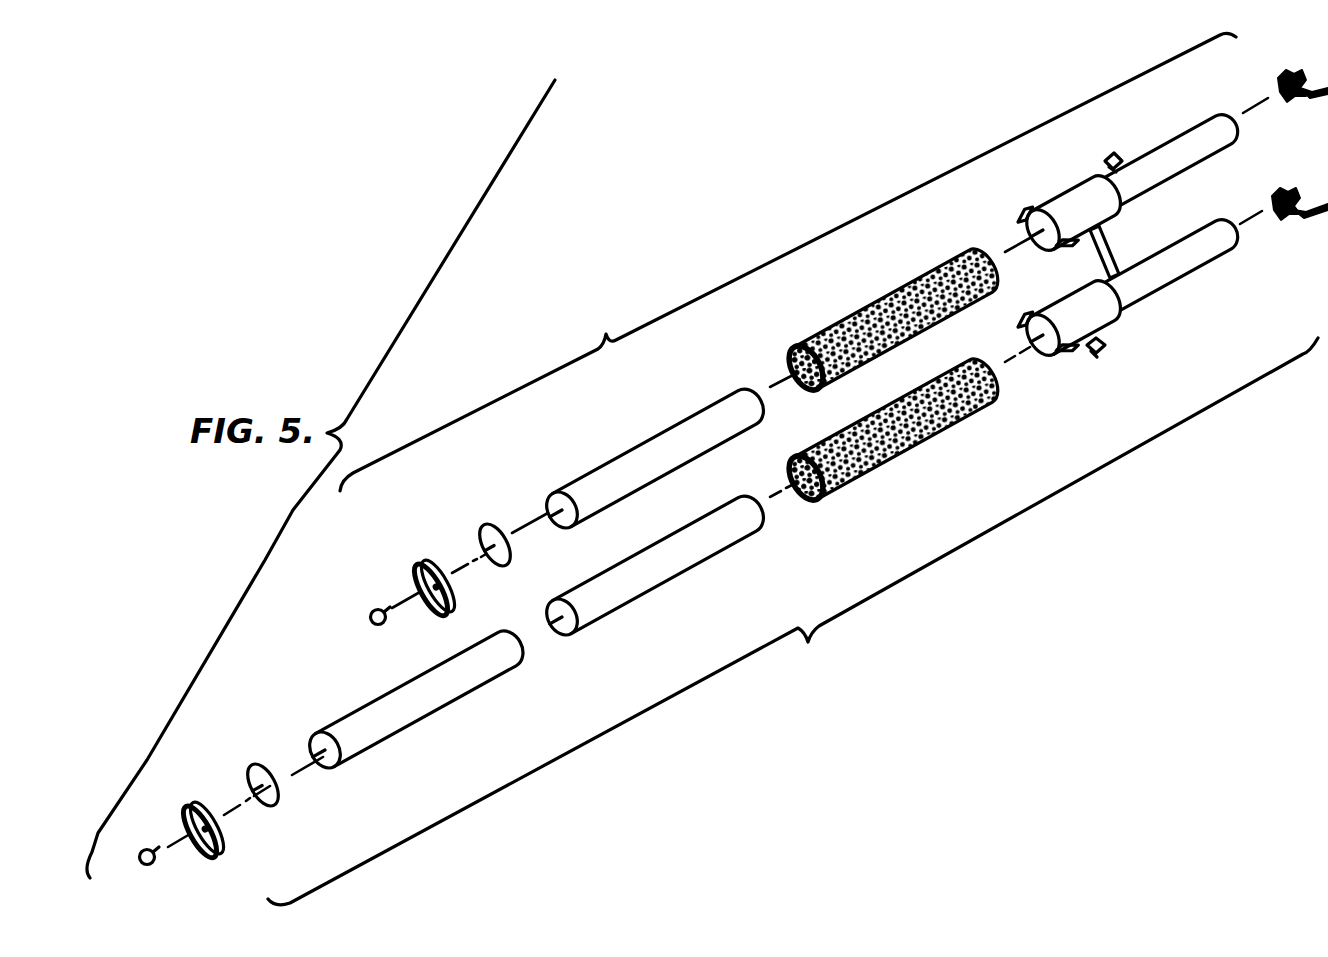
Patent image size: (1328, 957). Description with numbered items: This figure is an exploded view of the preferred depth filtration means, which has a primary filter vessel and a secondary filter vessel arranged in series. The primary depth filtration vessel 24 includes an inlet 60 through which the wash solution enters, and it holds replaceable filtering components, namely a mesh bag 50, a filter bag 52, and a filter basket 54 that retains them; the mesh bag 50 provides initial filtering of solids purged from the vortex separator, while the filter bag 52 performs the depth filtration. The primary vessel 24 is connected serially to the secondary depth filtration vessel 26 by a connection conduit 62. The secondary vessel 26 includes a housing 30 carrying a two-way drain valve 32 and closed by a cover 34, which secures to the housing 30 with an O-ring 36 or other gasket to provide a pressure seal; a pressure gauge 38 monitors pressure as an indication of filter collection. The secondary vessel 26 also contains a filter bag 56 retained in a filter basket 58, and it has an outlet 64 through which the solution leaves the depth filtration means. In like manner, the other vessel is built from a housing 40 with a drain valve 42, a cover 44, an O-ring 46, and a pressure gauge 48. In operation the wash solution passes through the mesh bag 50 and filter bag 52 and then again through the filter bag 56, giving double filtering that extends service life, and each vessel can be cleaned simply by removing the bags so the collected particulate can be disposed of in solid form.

The depth filtration vessel 24 is at (793, 621).
The depth filtration vessel 26 is at (788, 262).
The housing 30 is at (1150, 306).
The two-way drain valve 32 is at (1278, 194).
The cover 34 is at (221, 853).
The O-ring 36 is at (272, 802).
The pressure gauge 38 is at (145, 866).
The housing 40 is at (1092, 182).
The drain valve 42 is at (1284, 76).
The cover 44 is at (420, 565).
The O-ring 46 is at (486, 530).
The pressure gauge 48 is at (370, 617).
The mesh bag 50 is at (422, 716).
The filter bag 52 is at (666, 569).
The filter basket 54 is at (908, 440).
The filter bag 56 is at (642, 467).
The filter basket 58 is at (888, 302).
The inlet 60 is at (1097, 356).
The connection conduit 62 is at (1103, 266).
The outlet 64 is at (1108, 157).